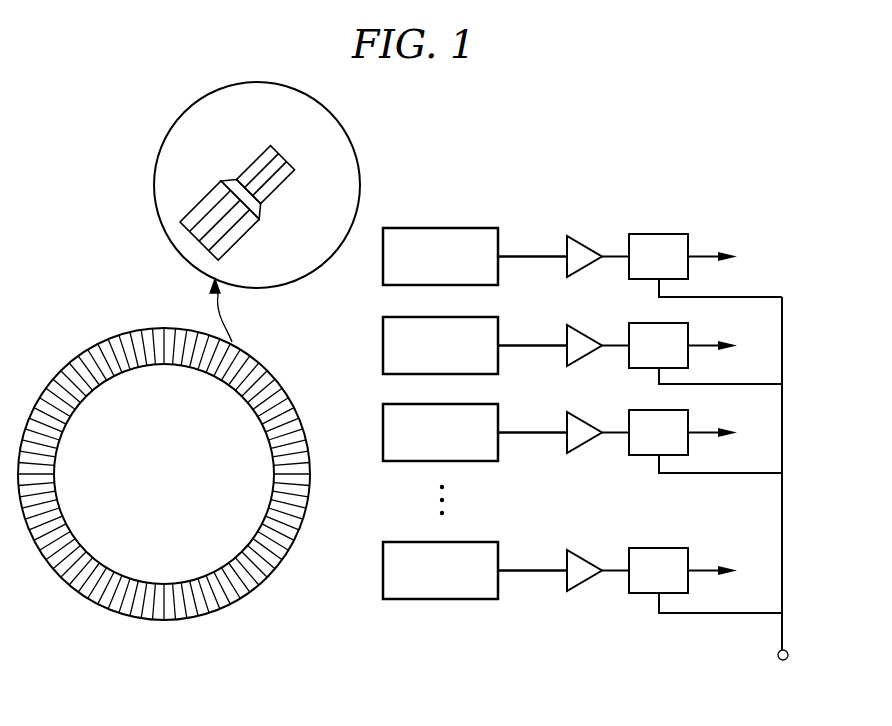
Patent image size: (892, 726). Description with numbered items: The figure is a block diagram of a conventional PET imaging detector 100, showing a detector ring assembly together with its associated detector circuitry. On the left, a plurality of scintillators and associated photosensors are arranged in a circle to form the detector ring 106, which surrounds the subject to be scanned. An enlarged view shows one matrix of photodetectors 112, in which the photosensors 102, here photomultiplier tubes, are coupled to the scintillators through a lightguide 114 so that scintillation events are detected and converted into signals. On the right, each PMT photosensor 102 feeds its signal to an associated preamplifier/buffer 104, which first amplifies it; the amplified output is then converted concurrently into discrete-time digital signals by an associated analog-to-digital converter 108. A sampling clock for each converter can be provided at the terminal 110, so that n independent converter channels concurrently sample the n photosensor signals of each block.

The PET imaging detector 100 is at (407, 142).
The photosensor 102 is at (400, 352).
The preamplifier/buffer 104 is at (598, 394).
The detector ring 106 is at (213, 193).
The analog-to-digital converter 108 is at (705, 414).
The terminal 110 is at (783, 661).
The matrix of photodetectors 112 is at (187, 118).
The lightguide 114 is at (258, 218).